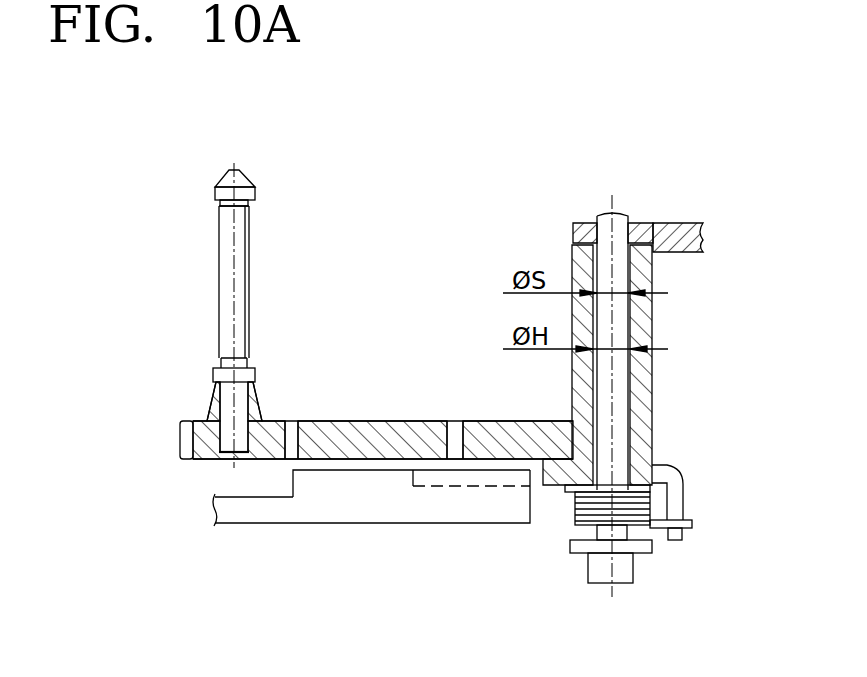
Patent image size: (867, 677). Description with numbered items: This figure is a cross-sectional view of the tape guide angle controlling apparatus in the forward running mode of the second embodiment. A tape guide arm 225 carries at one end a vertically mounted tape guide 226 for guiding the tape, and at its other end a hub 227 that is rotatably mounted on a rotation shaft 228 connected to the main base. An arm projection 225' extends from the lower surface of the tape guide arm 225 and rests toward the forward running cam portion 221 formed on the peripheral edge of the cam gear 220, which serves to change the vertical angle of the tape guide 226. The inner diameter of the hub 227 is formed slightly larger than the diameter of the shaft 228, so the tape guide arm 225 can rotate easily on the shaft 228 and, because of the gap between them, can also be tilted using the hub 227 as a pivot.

The cam gear 220 is at (346, 513).
The forward running cam portion 221 is at (332, 478).
The tape guide arm 225 is at (376, 401).
The arm projection 225' is at (471, 530).
The tape guide 226 is at (230, 261).
The hub 227 is at (650, 396).
The rotation shaft 228 is at (620, 318).